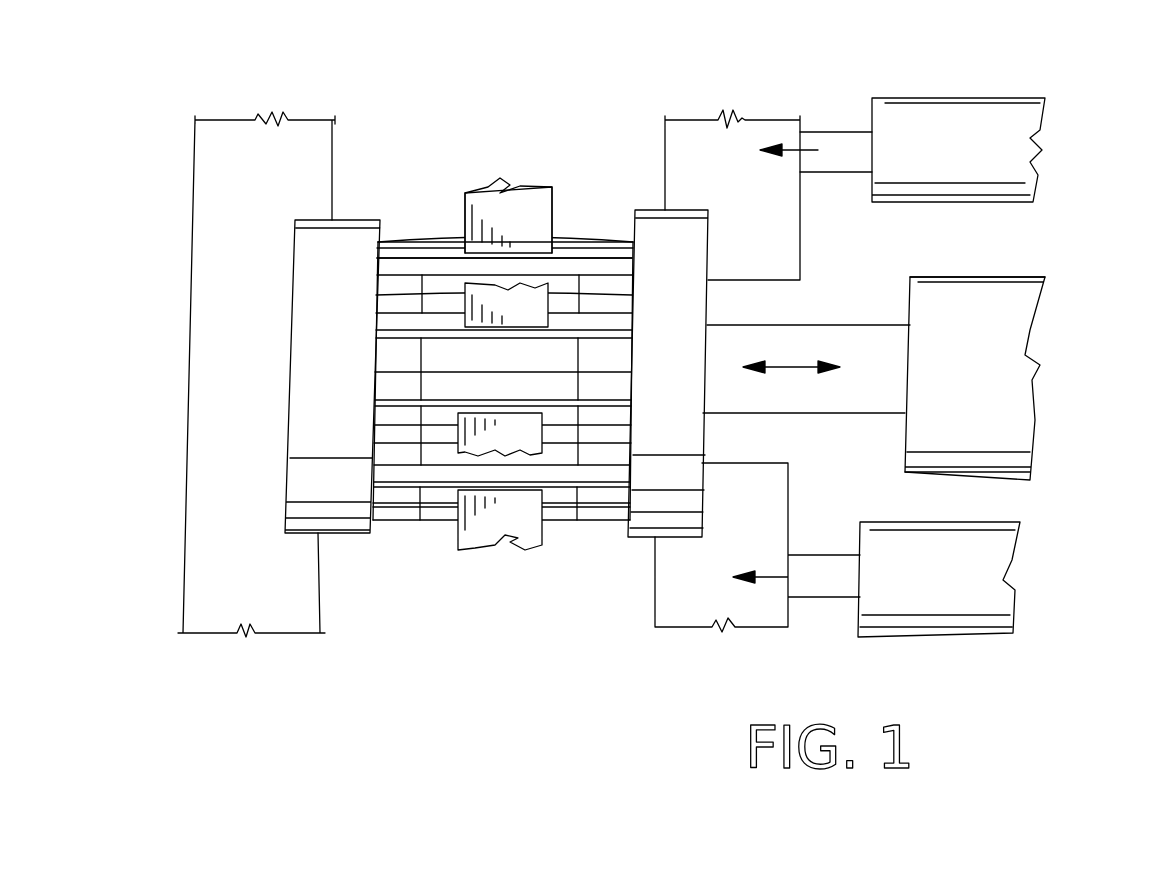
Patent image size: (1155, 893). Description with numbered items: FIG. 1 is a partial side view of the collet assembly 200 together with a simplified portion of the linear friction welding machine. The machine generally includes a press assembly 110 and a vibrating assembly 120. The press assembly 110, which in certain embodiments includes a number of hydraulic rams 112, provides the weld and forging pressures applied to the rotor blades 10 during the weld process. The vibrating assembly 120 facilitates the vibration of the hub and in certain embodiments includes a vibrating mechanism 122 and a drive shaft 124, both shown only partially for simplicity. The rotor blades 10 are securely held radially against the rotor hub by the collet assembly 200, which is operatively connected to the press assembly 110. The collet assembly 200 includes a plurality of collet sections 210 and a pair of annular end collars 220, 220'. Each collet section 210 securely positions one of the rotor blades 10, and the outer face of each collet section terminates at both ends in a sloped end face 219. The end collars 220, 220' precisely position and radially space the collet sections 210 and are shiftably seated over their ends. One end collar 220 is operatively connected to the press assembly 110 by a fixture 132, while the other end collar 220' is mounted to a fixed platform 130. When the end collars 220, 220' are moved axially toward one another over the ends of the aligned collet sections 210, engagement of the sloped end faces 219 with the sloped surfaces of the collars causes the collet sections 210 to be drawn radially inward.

The rotor blades 10 is at (533, 210).
The press assembly 110 is at (918, 97).
The hydraulic rams 112 is at (970, 130).
The vibrating assembly 120 is at (980, 400).
The vibrating mechanism 122 is at (1000, 320).
The drive shaft 124 is at (800, 365).
The fixed platform 130 is at (298, 156).
The fixture 132 is at (706, 155).
The collet assembly 200 is at (578, 545).
The collet sections 210 is at (445, 300).
The sloped end face 219 is at (395, 235).
The end collar 220 is at (648, 466).
The end collar 220' is at (369, 408).